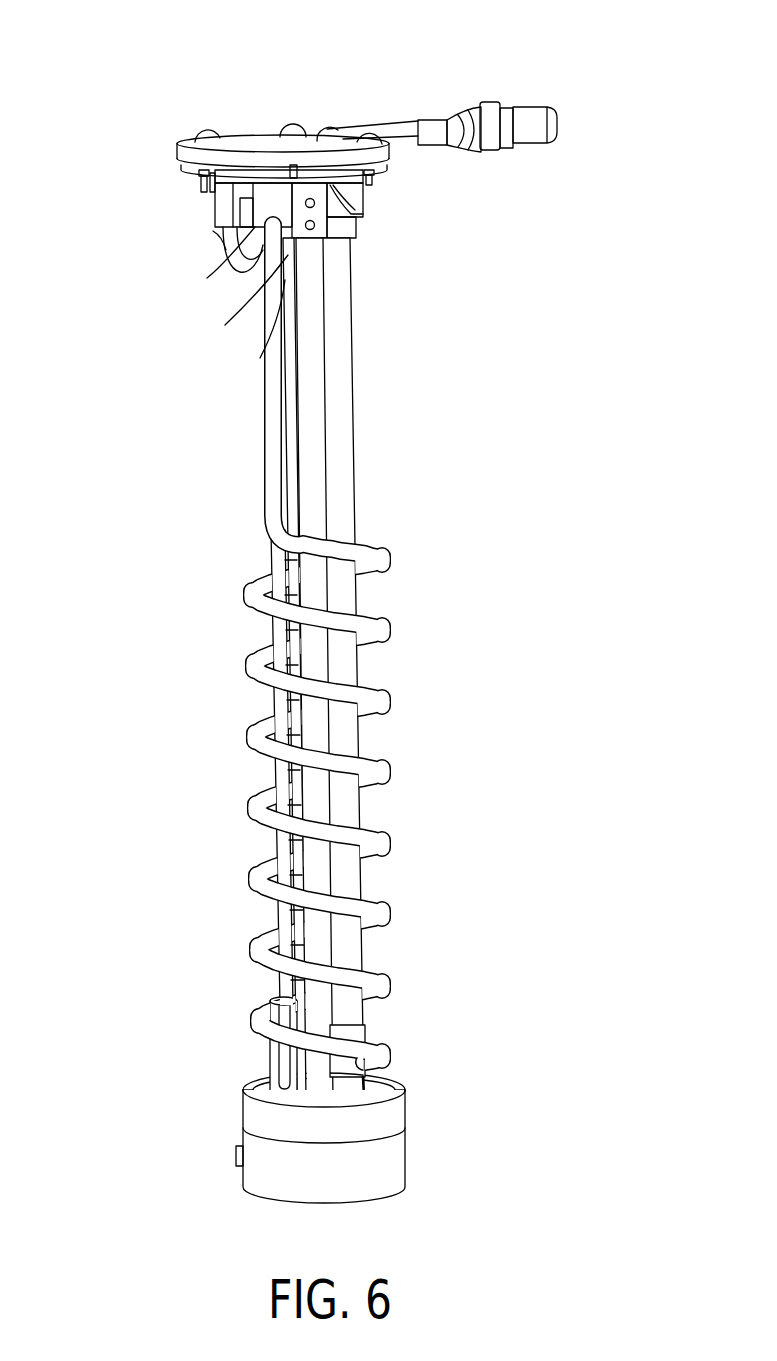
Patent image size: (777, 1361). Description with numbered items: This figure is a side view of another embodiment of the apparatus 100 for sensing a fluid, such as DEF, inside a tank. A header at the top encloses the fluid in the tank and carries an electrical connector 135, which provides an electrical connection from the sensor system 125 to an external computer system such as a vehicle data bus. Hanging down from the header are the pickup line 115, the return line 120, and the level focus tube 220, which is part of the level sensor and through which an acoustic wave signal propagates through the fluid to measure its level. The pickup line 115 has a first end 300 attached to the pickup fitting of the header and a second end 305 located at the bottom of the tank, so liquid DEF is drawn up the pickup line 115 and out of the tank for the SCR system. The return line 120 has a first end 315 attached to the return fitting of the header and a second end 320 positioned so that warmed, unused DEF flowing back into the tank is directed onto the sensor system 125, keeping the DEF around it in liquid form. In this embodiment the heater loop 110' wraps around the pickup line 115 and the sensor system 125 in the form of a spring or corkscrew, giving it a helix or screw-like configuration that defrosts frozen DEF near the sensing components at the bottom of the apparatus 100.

The apparatus 100 is at (91, 66).
The electrical connector 135 is at (552, 124).
The first end 315 is at (213, 231).
The first end 300 is at (256, 252).
The return line 120 is at (250, 268).
The second end 320 is at (284, 290).
The level focus tube 220 is at (323, 337).
The pickup line 115 is at (281, 567).
The heater loop 110' is at (360, 643).
The second end 305 is at (277, 998).
The sensor system 125 is at (416, 1030).